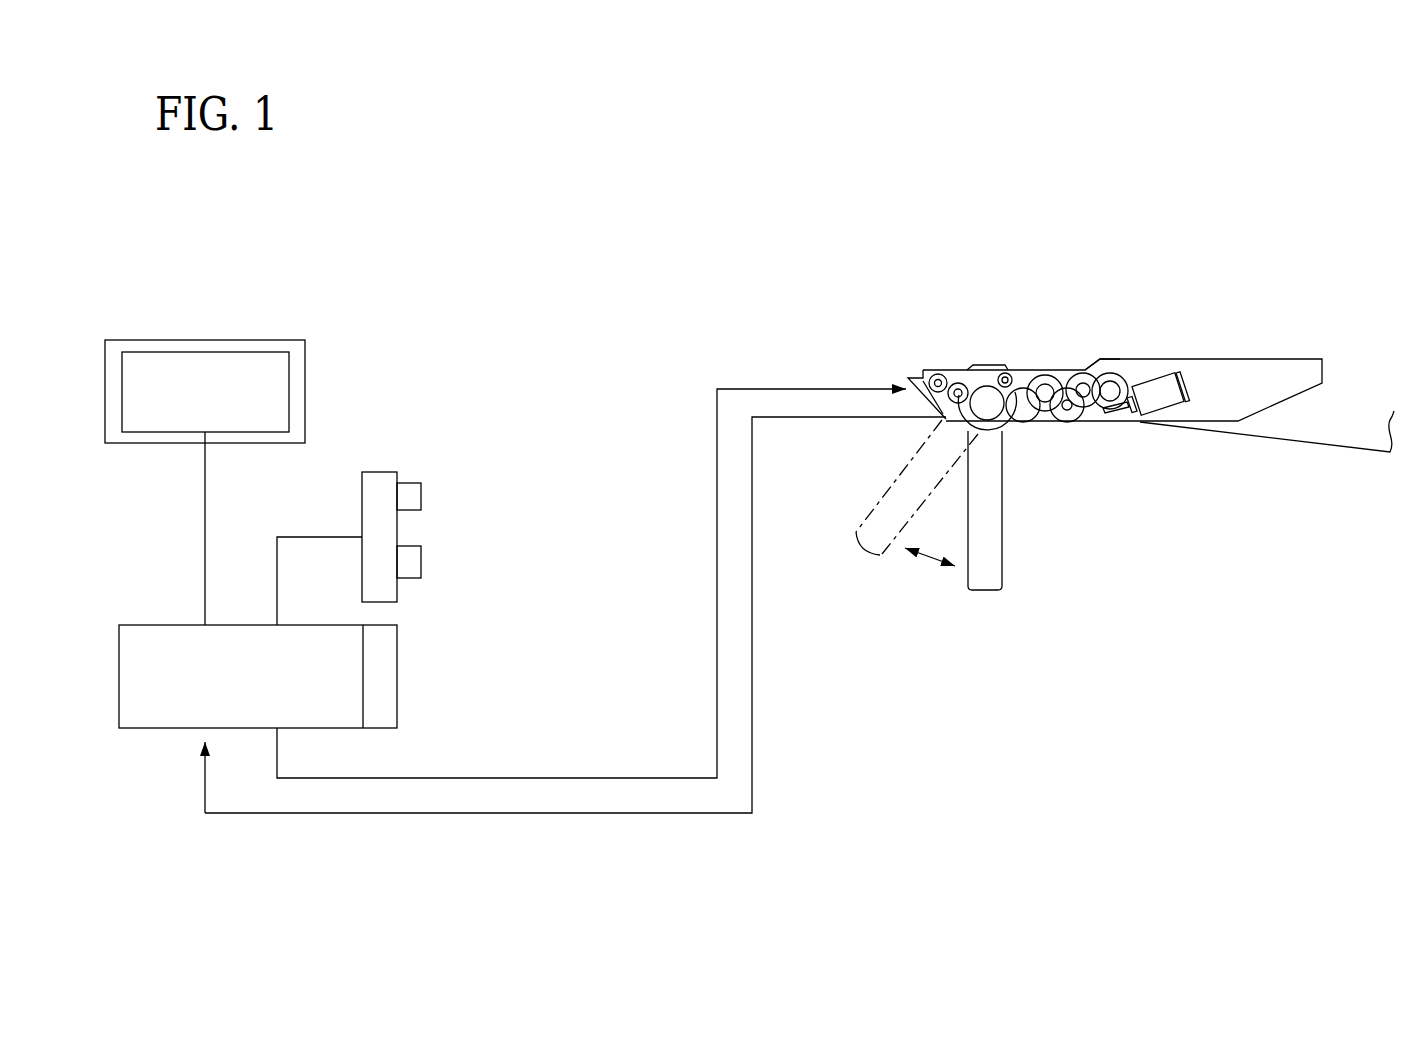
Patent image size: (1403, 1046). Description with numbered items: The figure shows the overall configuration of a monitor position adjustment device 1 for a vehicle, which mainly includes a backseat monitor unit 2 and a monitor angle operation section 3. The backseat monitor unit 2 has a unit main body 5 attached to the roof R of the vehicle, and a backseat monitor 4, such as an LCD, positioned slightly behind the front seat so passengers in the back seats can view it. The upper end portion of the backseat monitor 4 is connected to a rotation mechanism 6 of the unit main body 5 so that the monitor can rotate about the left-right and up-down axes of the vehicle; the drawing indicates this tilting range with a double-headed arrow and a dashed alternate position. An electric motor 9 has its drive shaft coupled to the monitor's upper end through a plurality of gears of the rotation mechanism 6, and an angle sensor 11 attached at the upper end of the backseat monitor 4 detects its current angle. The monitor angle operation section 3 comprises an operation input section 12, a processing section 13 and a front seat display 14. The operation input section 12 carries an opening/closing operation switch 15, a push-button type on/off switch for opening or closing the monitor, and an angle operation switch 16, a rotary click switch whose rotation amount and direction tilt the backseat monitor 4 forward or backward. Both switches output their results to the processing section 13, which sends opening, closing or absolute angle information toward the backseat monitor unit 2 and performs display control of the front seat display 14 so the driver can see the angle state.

The monitor position adjustment device 1 is at (658, 228).
The backseat monitor unit 2 is at (1165, 340).
The monitor angle operation section 3 is at (389, 338).
The backseat monitor 4 is at (983, 593).
The unit main body 5 is at (1098, 350).
The rotation mechanism 6 is at (1022, 374).
The electric motor 9 is at (1158, 403).
The angle sensor 11 is at (1006, 372).
The operation input section 12 is at (382, 464).
The processing section 13 is at (397, 679).
The front seat display 14 is at (205, 340).
The opening/closing operation switch 15 is at (423, 497).
The angle operation switch 16 is at (423, 565).
The roof R is at (1329, 460).